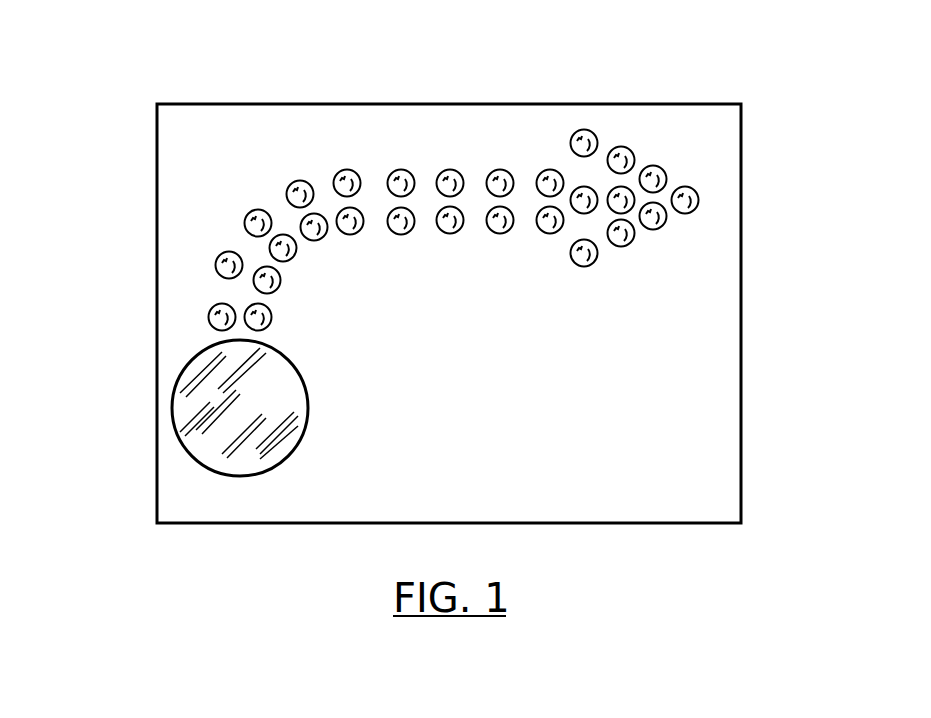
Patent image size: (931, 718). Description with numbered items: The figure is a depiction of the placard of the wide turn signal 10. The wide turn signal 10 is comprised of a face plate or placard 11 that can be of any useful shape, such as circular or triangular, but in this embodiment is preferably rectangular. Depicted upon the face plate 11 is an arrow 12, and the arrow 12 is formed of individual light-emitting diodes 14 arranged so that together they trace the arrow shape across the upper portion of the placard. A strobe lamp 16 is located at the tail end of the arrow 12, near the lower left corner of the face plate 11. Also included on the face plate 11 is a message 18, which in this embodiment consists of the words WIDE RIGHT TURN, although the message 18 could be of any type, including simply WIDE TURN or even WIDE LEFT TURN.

The wide turn signal 10 is at (248, 103).
The face plate 11 is at (334, 125).
The arrow 12 is at (374, 169).
The light-emitting diodes 14 is at (495, 169).
The strobe lamp 16 is at (290, 456).
The message 18 is at (714, 336).